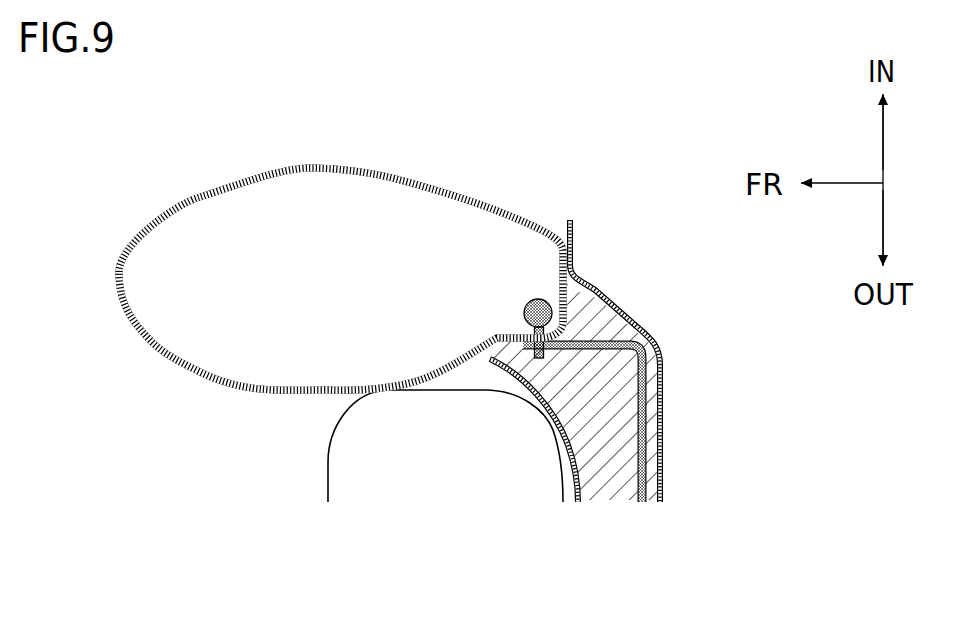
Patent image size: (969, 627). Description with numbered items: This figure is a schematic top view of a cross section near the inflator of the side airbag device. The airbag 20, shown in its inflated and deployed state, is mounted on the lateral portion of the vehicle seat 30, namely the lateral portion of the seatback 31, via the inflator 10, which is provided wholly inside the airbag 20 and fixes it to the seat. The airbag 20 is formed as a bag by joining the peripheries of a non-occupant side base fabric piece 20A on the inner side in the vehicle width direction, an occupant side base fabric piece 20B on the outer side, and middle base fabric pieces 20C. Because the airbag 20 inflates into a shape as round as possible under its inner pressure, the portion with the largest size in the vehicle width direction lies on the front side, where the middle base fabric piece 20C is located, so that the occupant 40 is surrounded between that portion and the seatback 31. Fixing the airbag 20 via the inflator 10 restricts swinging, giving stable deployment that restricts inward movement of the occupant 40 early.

The inflator 10 is at (552, 316).
The airbag 20 is at (180, 180).
The non-occupant side base fabric piece 20A is at (360, 166).
The occupant side base fabric piece 20B is at (253, 393).
The middle base fabric piece 20C is at (114, 272).
The vehicle seat 30 is at (391, 355).
The seatback 31 is at (650, 432).
The occupant 40 is at (474, 490).